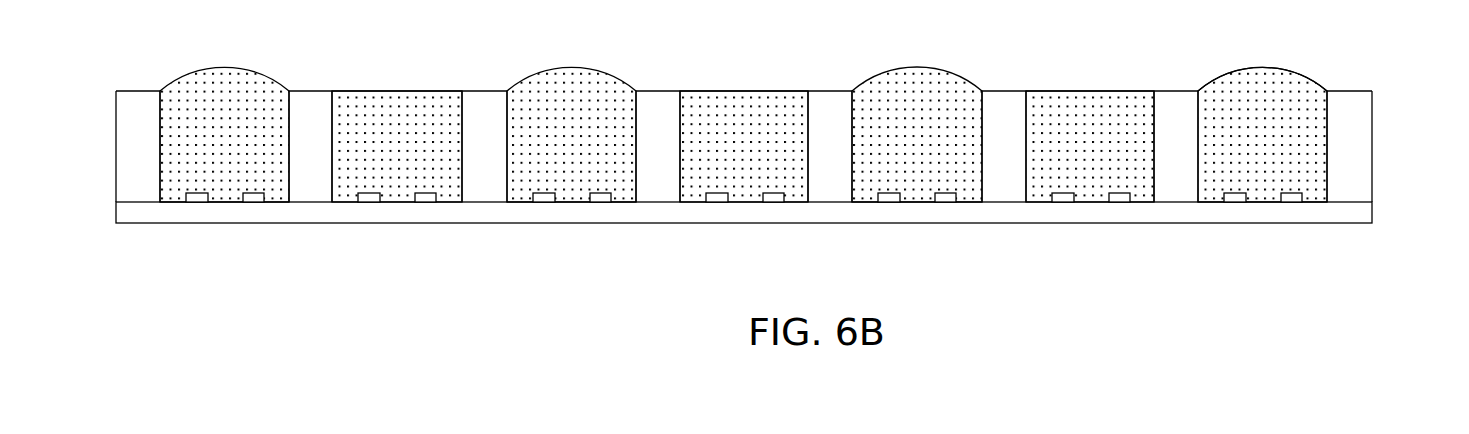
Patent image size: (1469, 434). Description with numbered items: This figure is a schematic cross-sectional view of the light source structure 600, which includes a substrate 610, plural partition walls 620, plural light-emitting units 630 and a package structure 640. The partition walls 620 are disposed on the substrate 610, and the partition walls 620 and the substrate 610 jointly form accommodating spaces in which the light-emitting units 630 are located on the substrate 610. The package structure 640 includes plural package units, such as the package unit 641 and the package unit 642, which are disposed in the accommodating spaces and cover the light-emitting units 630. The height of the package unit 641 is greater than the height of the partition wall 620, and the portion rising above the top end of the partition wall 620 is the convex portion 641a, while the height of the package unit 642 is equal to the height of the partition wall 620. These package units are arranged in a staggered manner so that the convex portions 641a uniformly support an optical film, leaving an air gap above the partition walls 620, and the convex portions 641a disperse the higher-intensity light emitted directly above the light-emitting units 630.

The light source structure 600 is at (146, 39).
The substrate 610 is at (250, 213).
The partition walls 620 is at (487, 190).
The light-emitting units 630 is at (717, 203).
The package structure 640 is at (1318, 145).
The package unit 641 is at (1267, 180).
The convex portion 641a is at (1270, 79).
The package unit 642 is at (1093, 180).